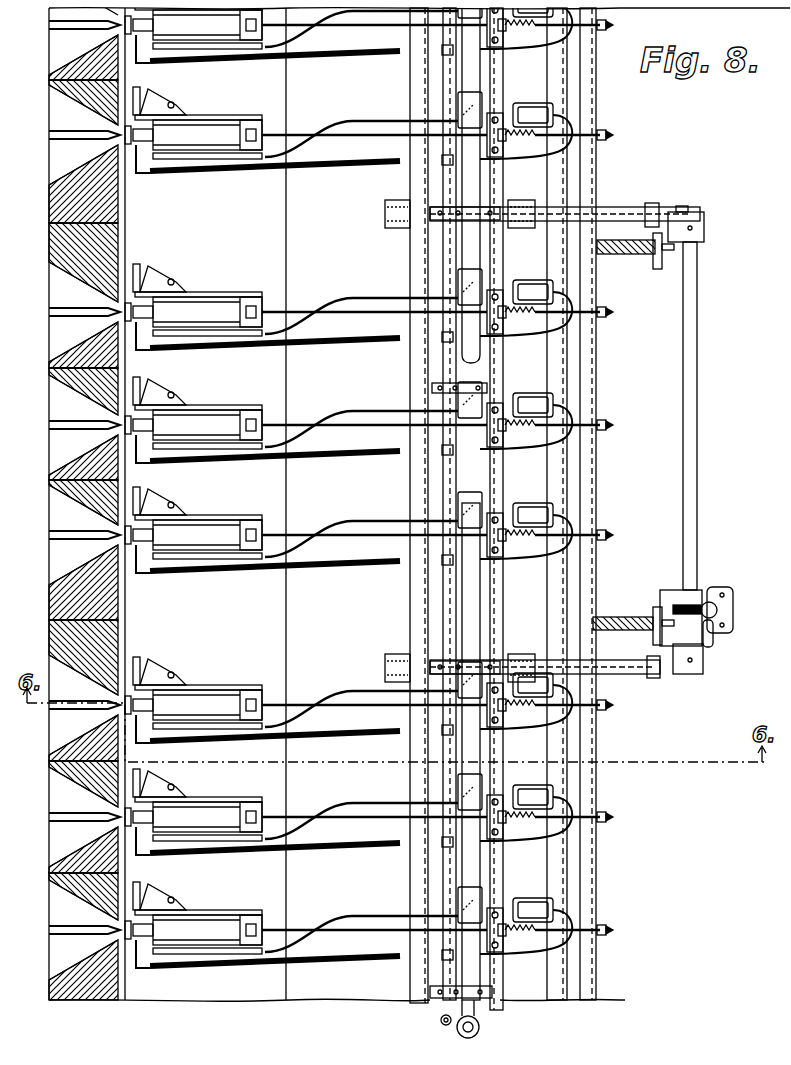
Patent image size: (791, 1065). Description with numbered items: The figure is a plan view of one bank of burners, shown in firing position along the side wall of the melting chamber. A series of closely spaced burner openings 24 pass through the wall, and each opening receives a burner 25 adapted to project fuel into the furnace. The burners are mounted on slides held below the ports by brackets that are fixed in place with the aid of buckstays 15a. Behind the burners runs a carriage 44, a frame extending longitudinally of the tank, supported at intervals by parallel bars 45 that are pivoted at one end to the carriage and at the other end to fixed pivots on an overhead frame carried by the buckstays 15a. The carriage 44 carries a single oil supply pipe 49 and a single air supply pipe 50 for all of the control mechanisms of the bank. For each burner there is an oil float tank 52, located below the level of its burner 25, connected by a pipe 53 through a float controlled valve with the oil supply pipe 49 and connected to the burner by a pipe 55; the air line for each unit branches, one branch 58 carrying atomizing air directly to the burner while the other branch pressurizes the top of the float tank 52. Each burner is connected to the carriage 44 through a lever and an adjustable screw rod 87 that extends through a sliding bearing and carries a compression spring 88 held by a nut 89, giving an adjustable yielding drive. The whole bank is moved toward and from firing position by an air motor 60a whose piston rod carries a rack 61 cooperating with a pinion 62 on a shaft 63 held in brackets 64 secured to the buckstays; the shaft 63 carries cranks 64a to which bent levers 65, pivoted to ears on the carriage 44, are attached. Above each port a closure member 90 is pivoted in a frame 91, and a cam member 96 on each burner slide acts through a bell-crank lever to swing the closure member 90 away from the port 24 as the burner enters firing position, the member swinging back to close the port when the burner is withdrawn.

The buckstays 15a is at (607, 258).
The burner openings 24 is at (72, 952).
The burners 25 is at (150, 925).
The carriage 44 is at (497, 1005).
The parallel bars 45 is at (392, 205).
The oil supply pipe 49 is at (435, 985).
The air supply pipe 50 is at (470, 880).
The oil float tank 52 is at (555, 968).
The pipe 53 is at (560, 910).
The pipe 55 is at (369, 773).
The branch 58 is at (330, 862).
The air motor 60a is at (770, 602).
The rack 61 is at (714, 608).
The pinion 62 is at (690, 608).
The shaft 63 is at (697, 400).
The brackets 64 is at (658, 262).
The cranks 64a is at (705, 670).
The bent levers 65 is at (610, 212).
The adjustable screw rod 87 is at (369, 773).
The compression spring 88 is at (369, 822).
The nut 89 is at (369, 812).
The closure member 90 is at (369, 812).
The frame 91 is at (90, 923).
The cam member 96 is at (175, 810).